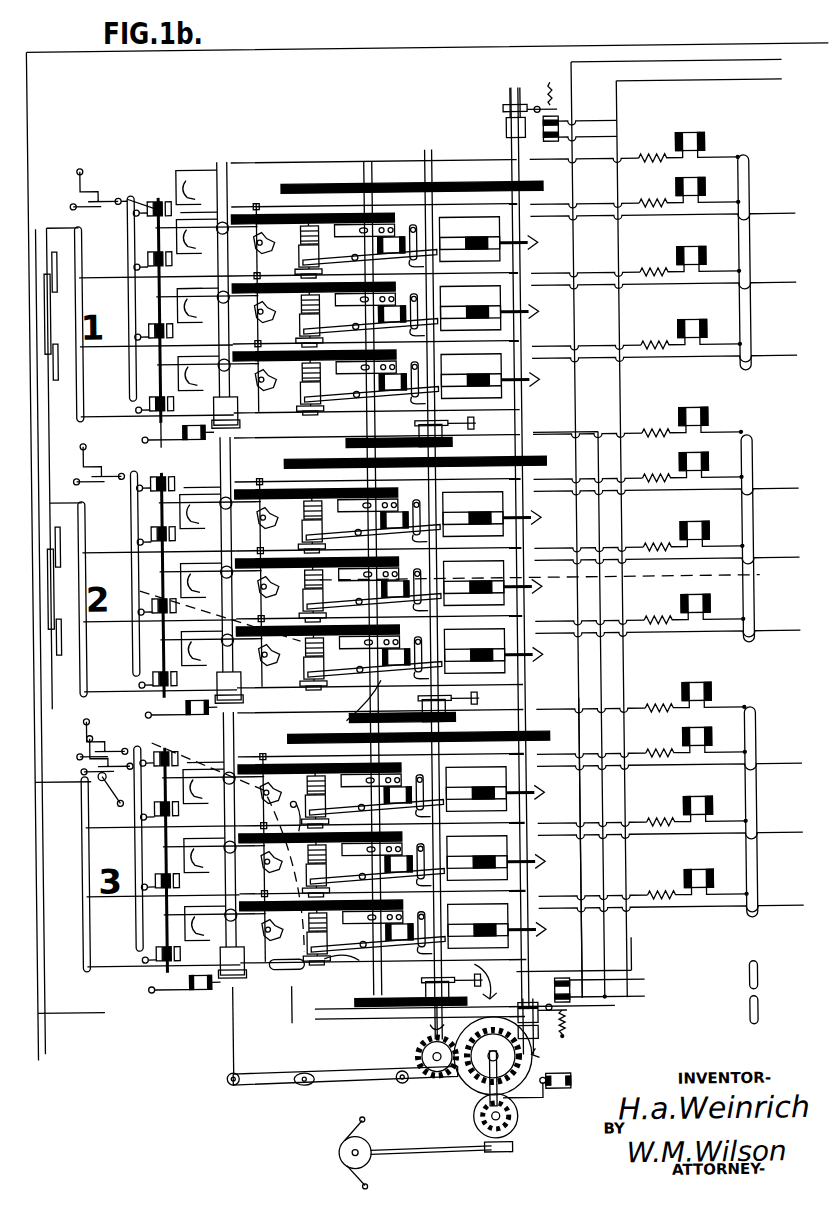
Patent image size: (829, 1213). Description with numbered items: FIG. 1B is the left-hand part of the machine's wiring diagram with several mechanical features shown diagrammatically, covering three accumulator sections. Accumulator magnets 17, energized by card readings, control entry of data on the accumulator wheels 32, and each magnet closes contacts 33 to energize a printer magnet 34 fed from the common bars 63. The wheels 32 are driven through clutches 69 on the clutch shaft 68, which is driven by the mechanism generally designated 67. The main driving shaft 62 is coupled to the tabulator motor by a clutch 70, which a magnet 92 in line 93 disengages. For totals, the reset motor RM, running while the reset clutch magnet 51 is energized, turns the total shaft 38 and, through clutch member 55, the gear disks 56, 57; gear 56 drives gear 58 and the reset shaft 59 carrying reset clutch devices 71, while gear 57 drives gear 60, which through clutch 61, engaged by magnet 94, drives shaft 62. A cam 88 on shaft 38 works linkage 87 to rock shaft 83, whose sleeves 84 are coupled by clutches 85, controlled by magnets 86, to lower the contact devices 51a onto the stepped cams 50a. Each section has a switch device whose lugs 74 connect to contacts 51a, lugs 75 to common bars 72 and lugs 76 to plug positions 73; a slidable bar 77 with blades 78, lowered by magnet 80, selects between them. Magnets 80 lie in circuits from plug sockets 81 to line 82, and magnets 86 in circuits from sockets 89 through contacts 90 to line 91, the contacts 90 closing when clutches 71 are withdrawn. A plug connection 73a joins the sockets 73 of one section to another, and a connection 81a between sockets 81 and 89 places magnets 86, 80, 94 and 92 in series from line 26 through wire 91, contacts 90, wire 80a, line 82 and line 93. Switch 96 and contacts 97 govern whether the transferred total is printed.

The accumulator magnet 17 is at (382, 386).
The line 26 is at (506, 84).
The accumulator wheel 32 is at (358, 200).
The contacts 33 is at (447, 232).
The printer magnet 34 is at (695, 200).
The total shaft 38 is at (540, 1100).
The stepped cam 50a is at (265, 235).
The reset clutch magnet 51 is at (565, 1080).
The contact device 51a is at (200, 185).
The clutch member 55 is at (512, 1135).
The gear disk 56 is at (482, 1075).
The gear disk 57 is at (480, 1090).
The gear 58 is at (410, 1050).
The reset shaft 59 is at (428, 1033).
The gear 60 is at (535, 1064).
The clutch 61 is at (565, 1029).
The main driving shaft 62 is at (524, 885).
The common bar 63 is at (756, 317).
The driving mechanism 67 is at (352, 183).
The clutch shaft 68 is at (332, 183).
The clutch 69 is at (278, 240).
The clutch 70 is at (512, 128).
The clutch device 71 is at (417, 427).
The common bar 72 is at (130, 366).
The plug position 73 is at (138, 334).
The plug connection 73a is at (542, 598).
The contact lug 74 is at (200, 272).
The contact lug 75 is at (158, 195).
The contact lug 76 is at (160, 255).
The slidable bar 77 is at (160, 370).
The contact blade 78 is at (135, 200).
The magnet 80 is at (185, 430).
The wire 80a is at (359, 700).
The plug socket 81 is at (144, 436).
The plug connection 81a is at (295, 808).
The line 82 is at (600, 672).
The rock shaft 83 is at (230, 1038).
The sleeve 84 is at (296, 880).
The clutch 85 is at (248, 958).
The magnet 86 is at (302, 1017).
The linkage 87 is at (338, 1075).
The cam 88 is at (540, 1052).
The plug socket 89 is at (343, 959).
The contact device 90 is at (482, 971).
The line 91 is at (577, 802).
The magnet 92 is at (560, 130).
The line 93 is at (768, 84).
The magnet 94 is at (610, 1001).
The switch 96 is at (100, 780).
The contacts 97 is at (88, 749).
The reset motor RM is at (332, 1150).